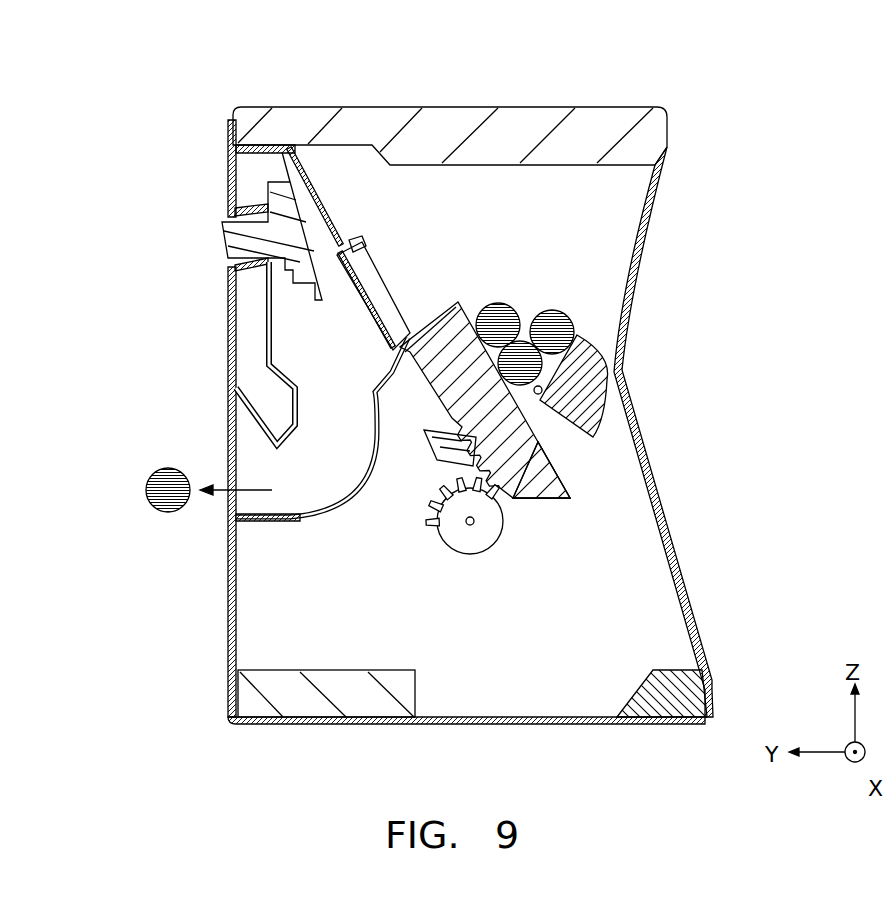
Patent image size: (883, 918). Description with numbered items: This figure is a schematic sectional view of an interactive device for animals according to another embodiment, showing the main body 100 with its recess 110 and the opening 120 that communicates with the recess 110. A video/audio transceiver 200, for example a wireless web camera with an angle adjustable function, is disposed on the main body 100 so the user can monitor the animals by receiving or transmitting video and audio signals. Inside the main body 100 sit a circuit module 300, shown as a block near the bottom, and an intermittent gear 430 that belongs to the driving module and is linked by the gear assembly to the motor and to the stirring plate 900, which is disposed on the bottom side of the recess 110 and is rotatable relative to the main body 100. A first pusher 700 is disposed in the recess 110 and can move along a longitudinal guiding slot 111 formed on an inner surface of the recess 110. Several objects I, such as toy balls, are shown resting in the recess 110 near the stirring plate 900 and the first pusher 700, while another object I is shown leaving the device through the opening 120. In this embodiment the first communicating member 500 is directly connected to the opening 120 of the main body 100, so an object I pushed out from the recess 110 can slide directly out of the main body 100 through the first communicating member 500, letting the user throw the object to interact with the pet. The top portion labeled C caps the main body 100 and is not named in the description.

The main body 100 is at (205, 138).
The recess 110 is at (585, 270).
The longitudinal guiding slot 111 is at (432, 300).
The opening 120 is at (243, 425).
The video/audio transceiver 200 is at (250, 243).
The circuit module 300 is at (286, 690).
The intermittent gear 430 is at (473, 553).
The first communicating member 500 is at (310, 352).
The first pusher 700 is at (540, 478).
The stirring plate 900 is at (585, 405).
The object I is at (492, 302).
The cover C is at (545, 130).